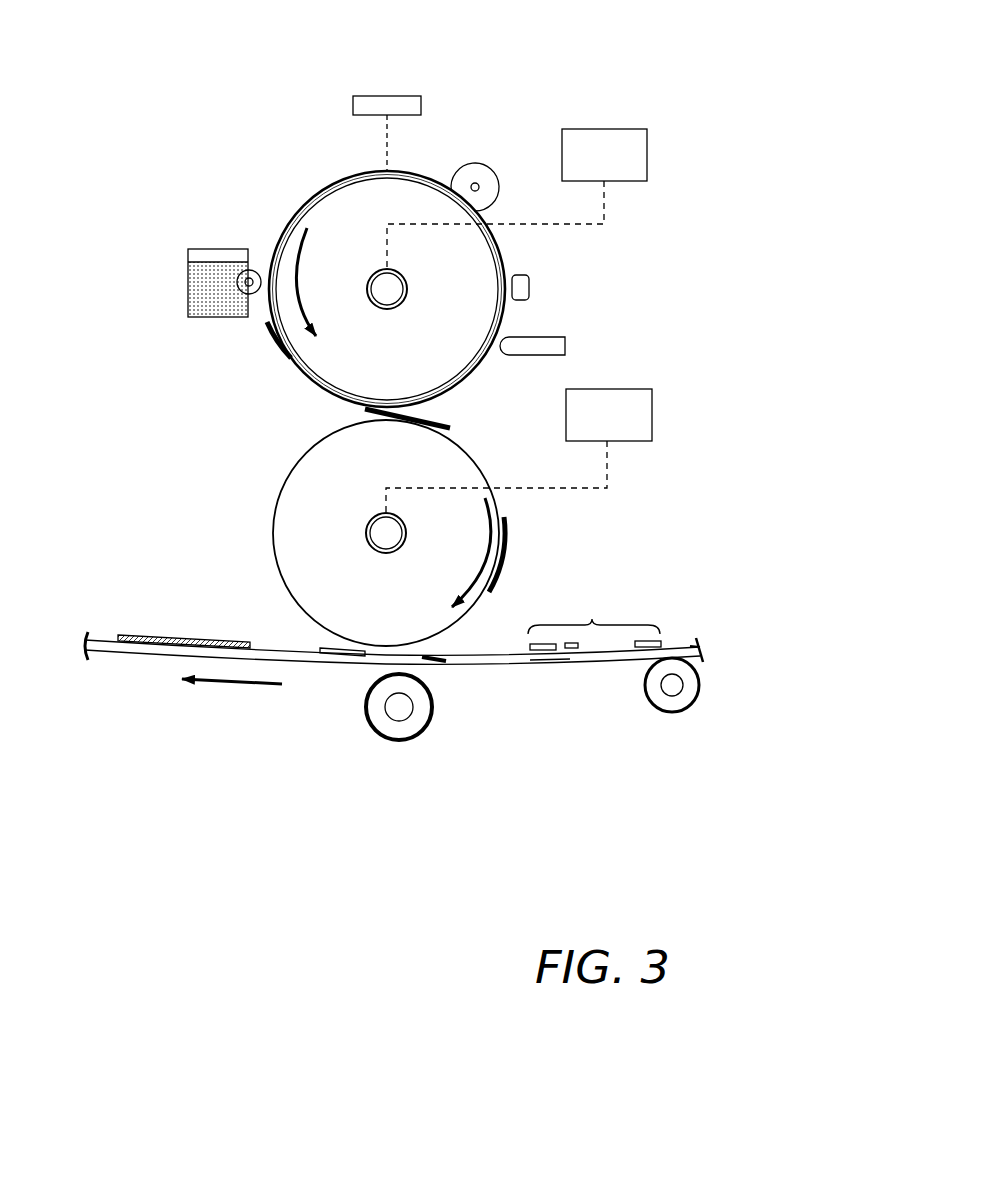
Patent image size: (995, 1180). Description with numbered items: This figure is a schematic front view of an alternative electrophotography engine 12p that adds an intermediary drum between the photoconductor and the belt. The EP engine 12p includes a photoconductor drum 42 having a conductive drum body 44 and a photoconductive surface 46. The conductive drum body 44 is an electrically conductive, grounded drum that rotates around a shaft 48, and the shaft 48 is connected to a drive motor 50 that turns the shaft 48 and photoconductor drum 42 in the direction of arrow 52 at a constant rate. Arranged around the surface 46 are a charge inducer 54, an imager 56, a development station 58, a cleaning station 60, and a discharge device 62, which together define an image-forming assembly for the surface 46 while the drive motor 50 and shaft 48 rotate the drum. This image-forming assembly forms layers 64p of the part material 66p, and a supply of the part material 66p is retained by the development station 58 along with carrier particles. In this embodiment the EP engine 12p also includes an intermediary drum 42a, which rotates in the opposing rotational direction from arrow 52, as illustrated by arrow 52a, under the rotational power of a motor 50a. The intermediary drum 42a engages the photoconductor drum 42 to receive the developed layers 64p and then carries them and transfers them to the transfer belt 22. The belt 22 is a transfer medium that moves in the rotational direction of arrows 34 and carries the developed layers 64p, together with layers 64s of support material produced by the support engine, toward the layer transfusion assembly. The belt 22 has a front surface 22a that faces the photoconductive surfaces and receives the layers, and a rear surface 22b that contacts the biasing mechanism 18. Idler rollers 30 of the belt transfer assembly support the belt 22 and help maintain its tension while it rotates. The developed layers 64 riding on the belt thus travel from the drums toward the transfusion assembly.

The electrophotography engine 12p is at (136, 82).
The photoconductor drum 42 is at (272, 196).
The conductive drum body 44 is at (388, 353).
The photoconductive surface 46 is at (335, 181).
The shaft 48 is at (404, 294).
The drive motor 50 is at (638, 129).
The arrow 52 is at (297, 262).
The charge inducer 54 is at (470, 165).
The imager 56 is at (407, 96).
The development station 58 is at (176, 246).
The cleaning station 60 is at (552, 337).
The discharge device 62 is at (530, 288).
The layers of the part material 64p is at (252, 340).
The part material 66p is at (208, 278).
The intermediary drum 42a is at (262, 478).
The motor 50a is at (630, 389).
The arrow 52a is at (483, 518).
The transfer belt 22 is at (105, 692).
The front surface 22a is at (700, 640).
The rear surface 22b is at (553, 661).
The idler rollers 30 is at (678, 712).
The arrows 34 is at (222, 684).
The biasing mechanism 18 is at (416, 713).
The developed layers on belt 64 is at (177, 613).
The layers of the support material 64s is at (328, 726).